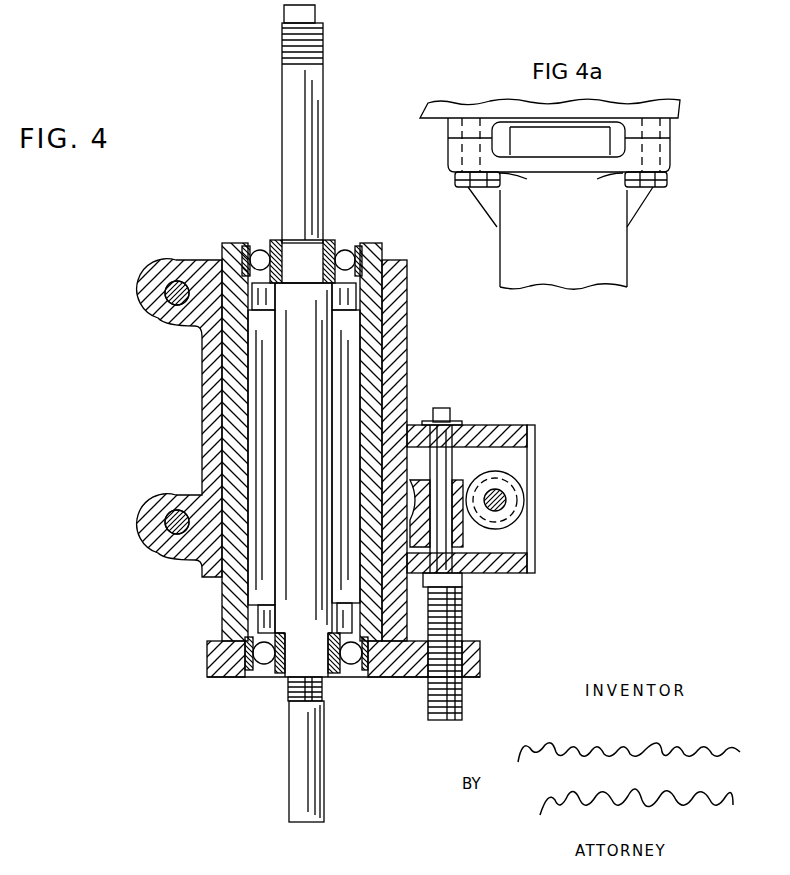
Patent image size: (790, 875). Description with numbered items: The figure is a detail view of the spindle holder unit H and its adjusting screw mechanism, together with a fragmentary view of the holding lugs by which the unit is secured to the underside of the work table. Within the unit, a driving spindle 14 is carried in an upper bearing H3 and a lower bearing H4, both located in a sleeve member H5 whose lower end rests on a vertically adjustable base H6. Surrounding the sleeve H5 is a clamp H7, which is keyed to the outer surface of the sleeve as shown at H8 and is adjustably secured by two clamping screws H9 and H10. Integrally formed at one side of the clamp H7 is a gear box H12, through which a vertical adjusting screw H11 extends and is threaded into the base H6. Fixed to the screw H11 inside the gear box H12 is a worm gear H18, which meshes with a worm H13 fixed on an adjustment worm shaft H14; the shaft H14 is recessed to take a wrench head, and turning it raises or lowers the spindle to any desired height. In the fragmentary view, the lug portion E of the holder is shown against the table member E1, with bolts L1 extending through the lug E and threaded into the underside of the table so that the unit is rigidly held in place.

In FIG. 4, the driving spindle 14 is at (322, 155).
In FIG. 4, the spindle holder unit H is at (384, 301).
In FIG. 4, the upper bearing H3 is at (350, 258).
In FIG. 4, the lower bearing H4 is at (349, 661).
In FIG. 4, the sleeve member H5 is at (380, 596).
In FIG. 4, the vertically adjustable base H6 is at (480, 667).
In FIG. 4, the clamp H7 is at (206, 428).
In FIG. 4, the key H8 is at (386, 379).
In FIG. 4, the clamping screw H9 is at (150, 302).
In FIG. 4, the clamping screw H10 is at (158, 522).
In FIG. 4, the vertical adjusting screw H11 is at (458, 622).
In FIG. 4, the gear box H12 is at (524, 432).
In FIG. 4, the worm H13 is at (522, 517).
In FIG. 4, the adjustment worm shaft H14 is at (501, 498).
In FIG. 4, the worm gear H18 is at (463, 488).
In FIG. 4A, the mounting plate E1 is at (681, 108).
In FIG. 4A, the lug portion E is at (672, 160).
In FIG. 4A, the bolts L1 is at (650, 183).